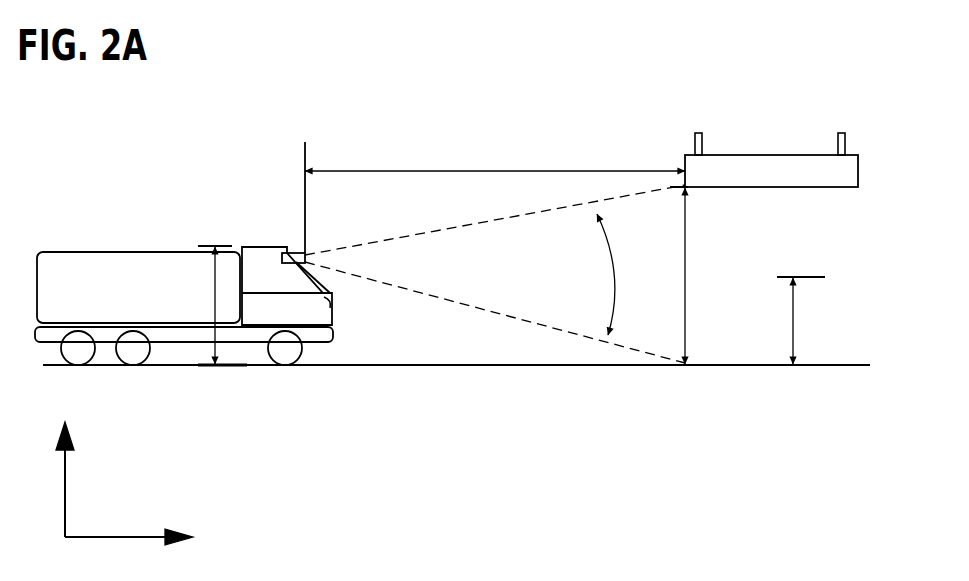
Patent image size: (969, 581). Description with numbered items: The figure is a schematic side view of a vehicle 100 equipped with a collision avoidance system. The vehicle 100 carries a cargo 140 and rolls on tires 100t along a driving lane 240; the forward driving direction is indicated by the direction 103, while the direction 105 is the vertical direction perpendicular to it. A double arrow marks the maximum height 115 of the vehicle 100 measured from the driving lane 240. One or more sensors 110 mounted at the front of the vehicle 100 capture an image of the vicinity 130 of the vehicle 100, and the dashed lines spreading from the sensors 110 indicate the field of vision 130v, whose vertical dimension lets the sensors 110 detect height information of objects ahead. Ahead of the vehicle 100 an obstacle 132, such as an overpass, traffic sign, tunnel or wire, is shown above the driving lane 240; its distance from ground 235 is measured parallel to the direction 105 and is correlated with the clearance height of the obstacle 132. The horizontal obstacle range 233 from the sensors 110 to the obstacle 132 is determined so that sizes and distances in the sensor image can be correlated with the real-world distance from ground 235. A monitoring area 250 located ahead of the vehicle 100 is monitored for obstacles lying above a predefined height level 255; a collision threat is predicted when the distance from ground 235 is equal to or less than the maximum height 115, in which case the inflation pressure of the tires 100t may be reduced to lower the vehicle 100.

The vehicle 100 is at (173, 192).
The tires 100t is at (287, 353).
The direction 103 is at (129, 550).
The direction 105 is at (43, 479).
The sensors 110 is at (286, 255).
The maximum height 115 is at (212, 290).
The vicinity 130 is at (480, 287).
The field of vision 130v is at (603, 274).
The obstacle 132 is at (762, 147).
The cargo 140 is at (130, 273).
The obstacle range 233 is at (435, 171).
The distance from ground 235 is at (686, 293).
The driving lane 240 is at (425, 365).
The monitoring area 250 is at (810, 240).
The predefined height level 255 is at (794, 332).